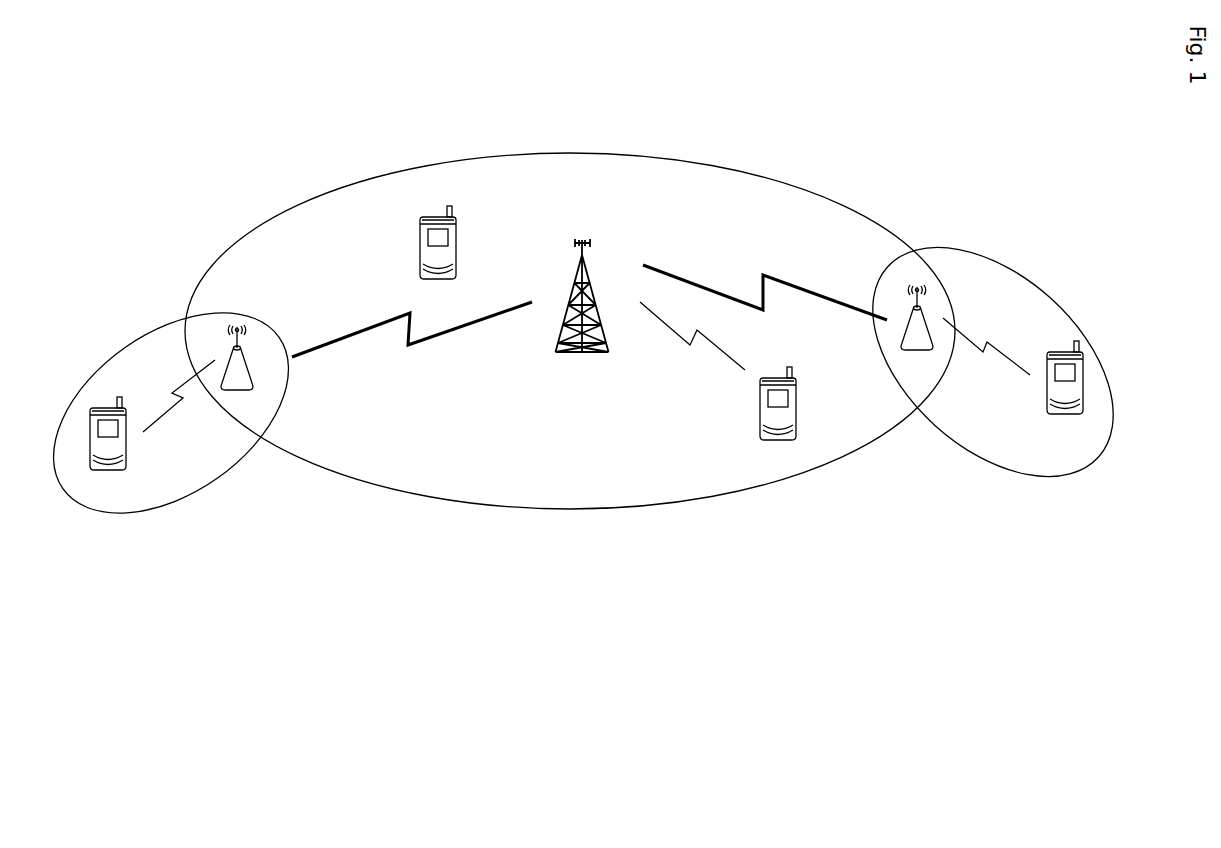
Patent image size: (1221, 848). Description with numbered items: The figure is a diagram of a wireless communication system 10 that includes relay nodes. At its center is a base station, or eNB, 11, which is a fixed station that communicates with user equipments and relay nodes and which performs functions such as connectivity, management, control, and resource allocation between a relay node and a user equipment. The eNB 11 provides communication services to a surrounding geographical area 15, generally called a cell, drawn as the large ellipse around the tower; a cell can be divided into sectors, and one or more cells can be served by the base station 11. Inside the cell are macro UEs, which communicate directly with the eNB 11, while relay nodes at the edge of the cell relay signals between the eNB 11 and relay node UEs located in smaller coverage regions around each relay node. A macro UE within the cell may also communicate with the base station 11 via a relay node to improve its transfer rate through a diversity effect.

The wireless communication system 10 is at (750, 138).
The base station 11 is at (588, 268).
The geographical area 15 is at (553, 152).